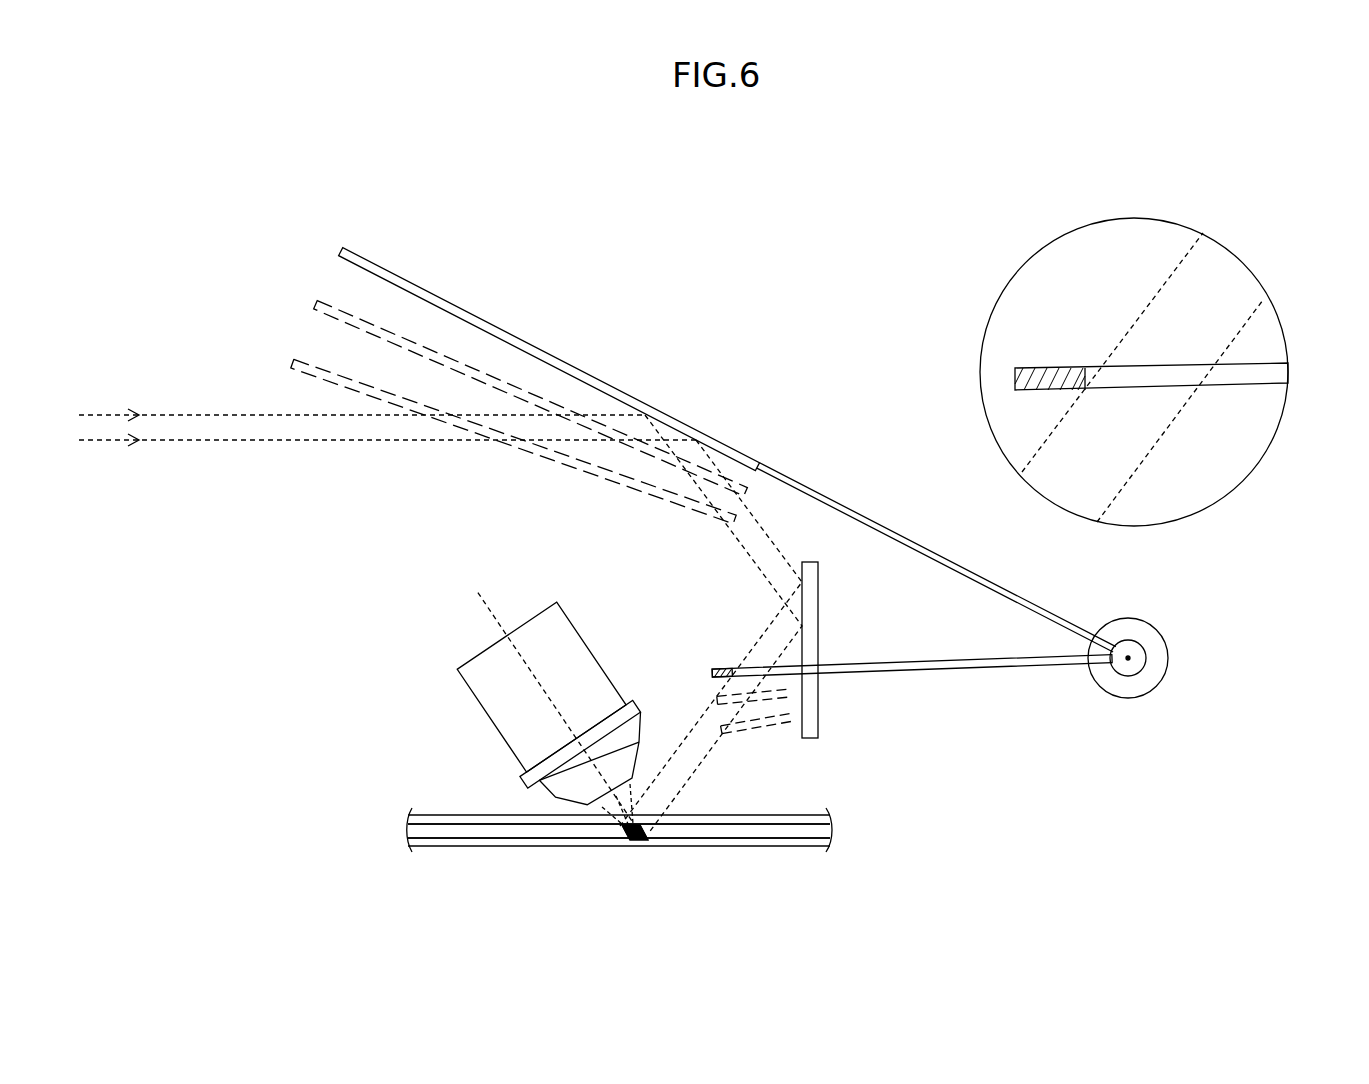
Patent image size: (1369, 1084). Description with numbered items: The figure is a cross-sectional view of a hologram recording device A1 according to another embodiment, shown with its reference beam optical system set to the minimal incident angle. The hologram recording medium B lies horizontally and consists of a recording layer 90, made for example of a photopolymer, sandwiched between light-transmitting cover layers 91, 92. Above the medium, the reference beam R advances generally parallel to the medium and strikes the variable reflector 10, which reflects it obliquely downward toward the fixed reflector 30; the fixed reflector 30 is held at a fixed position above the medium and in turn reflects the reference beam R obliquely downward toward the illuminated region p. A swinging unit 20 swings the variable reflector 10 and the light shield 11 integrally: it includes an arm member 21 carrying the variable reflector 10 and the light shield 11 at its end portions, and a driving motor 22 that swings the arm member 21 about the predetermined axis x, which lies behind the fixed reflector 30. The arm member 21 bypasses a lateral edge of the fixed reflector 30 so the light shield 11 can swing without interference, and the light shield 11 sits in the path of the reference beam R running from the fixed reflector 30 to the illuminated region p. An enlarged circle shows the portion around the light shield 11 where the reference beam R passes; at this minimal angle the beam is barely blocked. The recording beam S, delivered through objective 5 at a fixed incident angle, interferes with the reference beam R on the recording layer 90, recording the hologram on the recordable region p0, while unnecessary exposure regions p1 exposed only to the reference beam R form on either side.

The variable reflector 10 is at (427, 283).
The light shield 11 is at (714, 668).
The swinging unit 20 is at (1165, 609).
The arm member 21 is at (960, 578).
The driving motor 22 is at (1167, 680).
The fixed reflector 30 is at (811, 561).
The objective lens 5 is at (483, 712).
The recording layer 90 is at (828, 830).
The cover layer 91 is at (828, 820).
The cover layer 92 is at (828, 842).
The hologram recording medium B is at (668, 870).
The reference beam R is at (108, 410).
The recording beam S is at (497, 612).
The illuminated region p is at (644, 776).
The recordable region p0 is at (640, 843).
The unnecessary exposure region p1 is at (623, 838).
The predetermined axis x is at (1128, 662).
The hologram recording device A1 is at (729, 196).